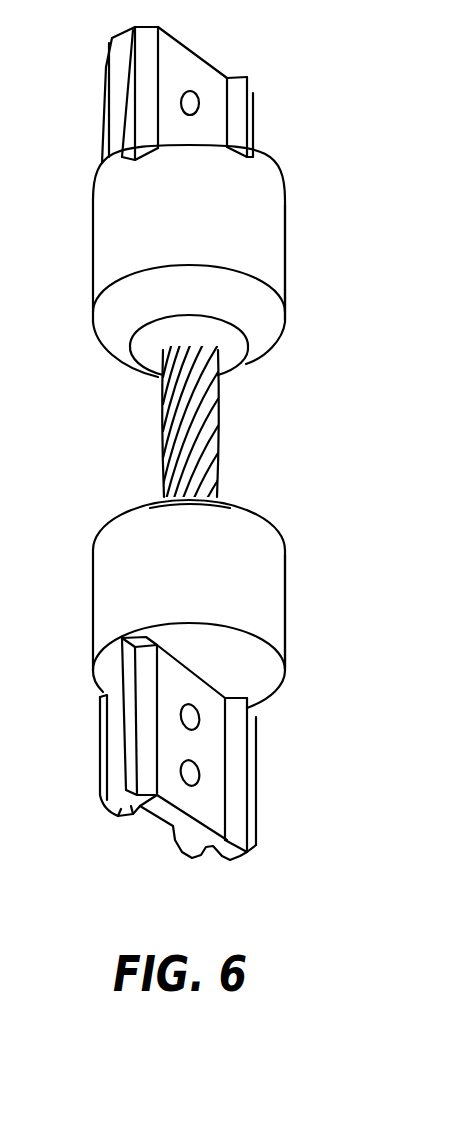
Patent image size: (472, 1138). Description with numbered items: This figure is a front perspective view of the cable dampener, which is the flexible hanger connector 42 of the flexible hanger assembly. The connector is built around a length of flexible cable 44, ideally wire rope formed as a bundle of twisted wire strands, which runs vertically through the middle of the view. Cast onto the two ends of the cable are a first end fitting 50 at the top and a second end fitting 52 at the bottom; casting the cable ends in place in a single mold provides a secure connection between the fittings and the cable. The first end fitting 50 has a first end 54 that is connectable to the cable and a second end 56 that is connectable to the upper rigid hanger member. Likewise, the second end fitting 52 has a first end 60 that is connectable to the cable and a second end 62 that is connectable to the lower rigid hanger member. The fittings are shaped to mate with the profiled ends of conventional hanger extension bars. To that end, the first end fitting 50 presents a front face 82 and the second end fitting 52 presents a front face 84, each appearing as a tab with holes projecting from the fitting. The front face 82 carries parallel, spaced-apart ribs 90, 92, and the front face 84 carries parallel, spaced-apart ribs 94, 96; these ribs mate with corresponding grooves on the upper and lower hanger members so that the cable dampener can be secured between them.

The flexible hanger connector 42 is at (343, 258).
The flexible cable 44 is at (167, 408).
The first end fitting 50 is at (112, 213).
The second end fitting 52 is at (110, 603).
The first end of first end fitting 54 is at (285, 212).
The second end of first end fitting 56 is at (187, 81).
The first end of second end fitting 60 is at (280, 588).
The second end of second end fitting 62 is at (182, 748).
The front face of first end fitting 82 is at (180, 68).
The front face of second end fitting 84 is at (173, 737).
The rib 90 is at (150, 54).
The rib 92 is at (243, 96).
The rib 94 is at (143, 687).
The rib 96 is at (237, 730).